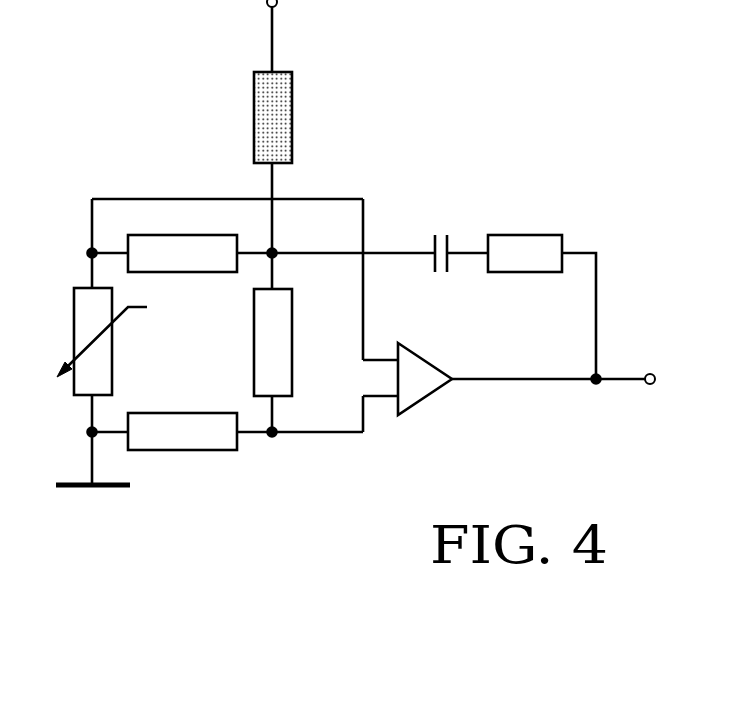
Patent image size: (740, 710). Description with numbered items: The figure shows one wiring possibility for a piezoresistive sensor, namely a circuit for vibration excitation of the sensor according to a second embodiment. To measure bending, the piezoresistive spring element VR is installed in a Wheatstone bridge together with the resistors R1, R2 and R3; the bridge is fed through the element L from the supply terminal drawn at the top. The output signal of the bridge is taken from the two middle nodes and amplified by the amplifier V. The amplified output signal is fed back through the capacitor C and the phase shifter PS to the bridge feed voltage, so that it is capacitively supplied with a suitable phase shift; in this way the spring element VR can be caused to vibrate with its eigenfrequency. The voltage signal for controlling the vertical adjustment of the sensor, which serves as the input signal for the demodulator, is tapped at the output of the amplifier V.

The inductor (coil) L is at (285, 117).
The resistor R3 is at (182, 238).
The resistor R2 is at (252, 342).
The resistor R1 is at (182, 449).
The piezoresistive spring element VR is at (90, 341).
The capacitor C is at (440, 237).
The phase shifter PS is at (525, 237).
The amplifier V is at (425, 368).